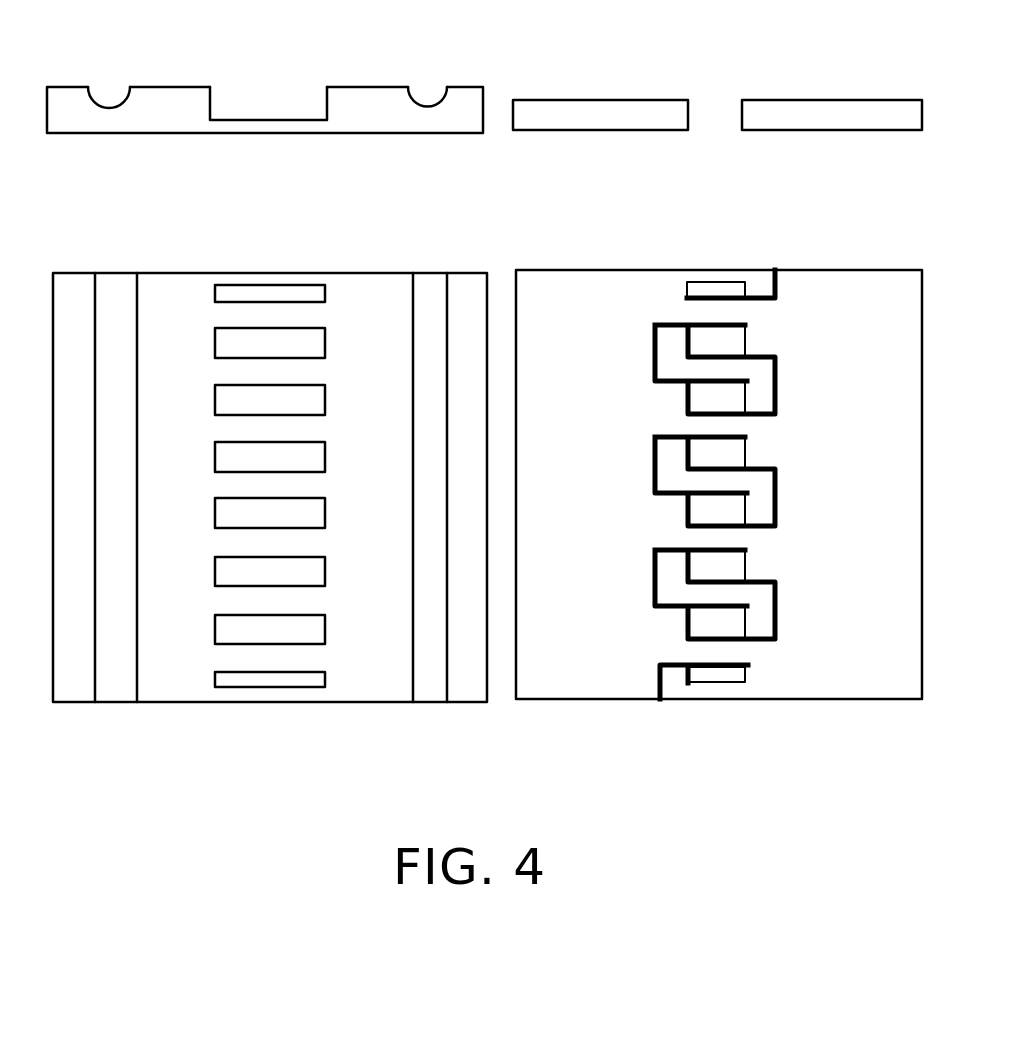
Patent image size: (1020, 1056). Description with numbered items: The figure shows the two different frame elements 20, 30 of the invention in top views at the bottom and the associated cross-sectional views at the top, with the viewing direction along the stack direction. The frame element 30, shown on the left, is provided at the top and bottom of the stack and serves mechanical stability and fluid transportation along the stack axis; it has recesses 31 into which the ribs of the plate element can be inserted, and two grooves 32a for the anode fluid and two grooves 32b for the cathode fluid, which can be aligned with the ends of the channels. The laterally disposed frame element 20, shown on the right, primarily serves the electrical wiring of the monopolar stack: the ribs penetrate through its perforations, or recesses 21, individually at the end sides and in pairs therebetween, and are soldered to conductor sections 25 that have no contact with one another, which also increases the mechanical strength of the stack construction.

The frame element 20 is at (683, 162).
The recess 21 is at (716, 108).
The conductor section 25 is at (655, 360).
The frame element 30 is at (262, 152).
The recess 31 is at (263, 102).
The groove 32a is at (427, 92).
The groove 32b is at (123, 67).